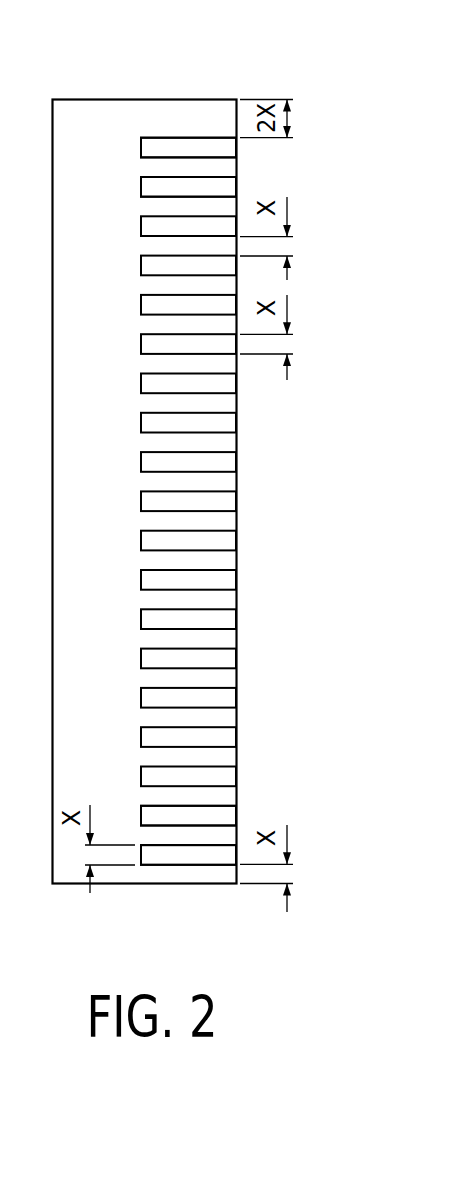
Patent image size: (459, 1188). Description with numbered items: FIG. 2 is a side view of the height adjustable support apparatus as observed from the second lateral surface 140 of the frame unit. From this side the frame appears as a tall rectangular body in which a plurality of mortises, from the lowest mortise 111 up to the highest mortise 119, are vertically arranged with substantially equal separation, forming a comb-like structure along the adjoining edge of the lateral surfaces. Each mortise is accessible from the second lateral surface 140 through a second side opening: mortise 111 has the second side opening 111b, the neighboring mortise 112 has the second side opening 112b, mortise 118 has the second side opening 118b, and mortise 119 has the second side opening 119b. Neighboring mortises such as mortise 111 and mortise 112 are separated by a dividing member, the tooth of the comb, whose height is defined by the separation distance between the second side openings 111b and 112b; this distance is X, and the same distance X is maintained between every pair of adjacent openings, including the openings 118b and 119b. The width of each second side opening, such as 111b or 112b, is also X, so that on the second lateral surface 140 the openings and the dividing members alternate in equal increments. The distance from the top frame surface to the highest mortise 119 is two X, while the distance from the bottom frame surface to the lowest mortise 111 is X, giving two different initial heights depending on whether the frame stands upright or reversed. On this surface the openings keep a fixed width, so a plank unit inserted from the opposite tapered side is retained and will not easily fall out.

The second lateral surface 140 is at (108, 121).
The mortise 119 is at (153, 150).
The second side opening 119b is at (186, 150).
The mortise 118 is at (153, 192).
The second side opening 118b is at (213, 187).
The mortise 112 is at (165, 815).
The second side opening 112b is at (212, 813).
The mortise 111 is at (168, 855).
The second side opening 111b is at (203, 853).